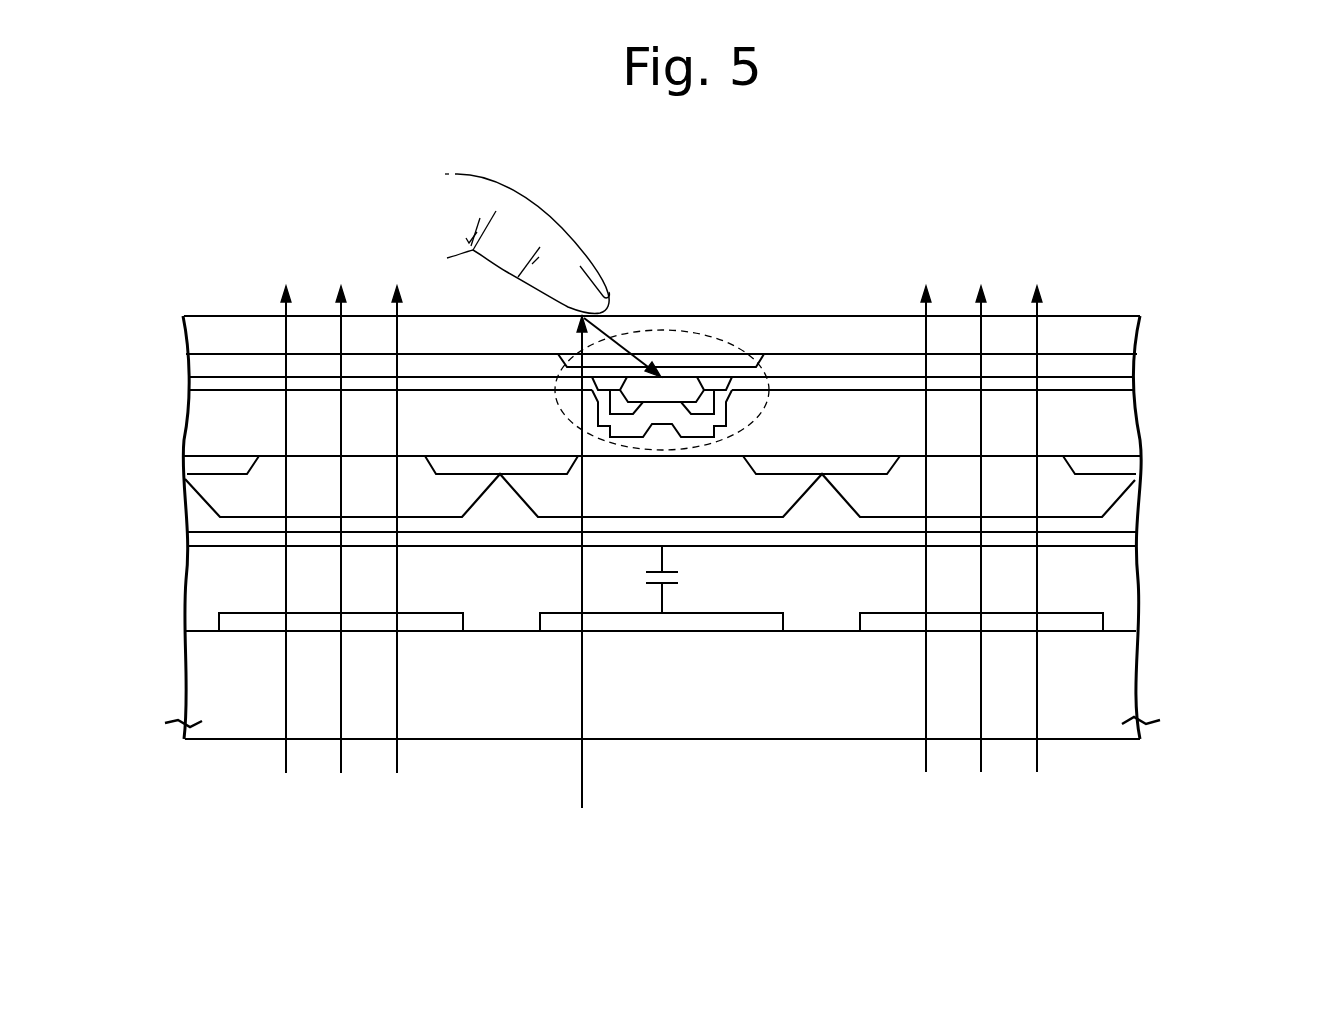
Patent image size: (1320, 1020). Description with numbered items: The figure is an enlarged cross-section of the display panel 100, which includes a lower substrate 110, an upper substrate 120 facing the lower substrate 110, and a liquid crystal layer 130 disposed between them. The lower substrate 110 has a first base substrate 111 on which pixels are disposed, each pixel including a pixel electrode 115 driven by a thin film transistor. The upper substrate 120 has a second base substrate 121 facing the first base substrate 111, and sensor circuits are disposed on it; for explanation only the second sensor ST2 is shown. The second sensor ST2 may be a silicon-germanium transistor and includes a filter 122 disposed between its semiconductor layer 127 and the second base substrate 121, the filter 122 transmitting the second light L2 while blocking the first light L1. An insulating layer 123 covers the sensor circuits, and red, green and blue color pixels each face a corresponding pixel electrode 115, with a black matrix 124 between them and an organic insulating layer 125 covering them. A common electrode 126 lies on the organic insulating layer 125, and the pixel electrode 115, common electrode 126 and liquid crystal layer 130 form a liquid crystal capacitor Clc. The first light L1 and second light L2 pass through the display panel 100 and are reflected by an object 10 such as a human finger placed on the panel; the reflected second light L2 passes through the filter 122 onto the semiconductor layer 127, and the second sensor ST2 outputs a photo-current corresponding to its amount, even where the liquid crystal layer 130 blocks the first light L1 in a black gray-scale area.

The object 10 is at (566, 232).
The display panel 100 is at (1097, 248).
The lower substrate 110 is at (727, 674).
The first base substrate 111 is at (697, 707).
The pixel electrode 115 is at (1090, 619).
The upper substrate 120 is at (726, 405).
The second base substrate 121 is at (1124, 338).
The filter 122 is at (655, 367).
The insulating layer 123 is at (1124, 418).
The black matrix 124 is at (1124, 466).
The organic insulating layer 125 is at (1124, 508).
The common electrode 126 is at (699, 542).
The semiconductor layer 127 is at (705, 398).
The liquid crystal layer 130 is at (698, 588).
The second sensor ST2 is at (712, 333).
The liquid crystal capacitor Clc is at (679, 579).
The first light L1 is at (397, 790).
The second light L2 is at (1037, 790).